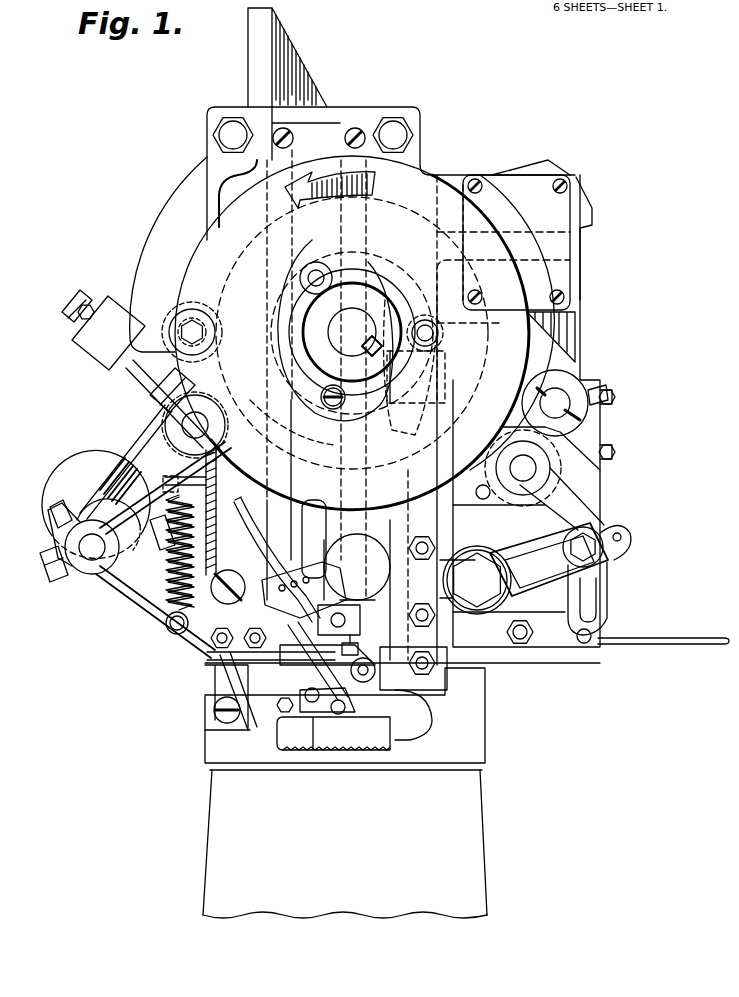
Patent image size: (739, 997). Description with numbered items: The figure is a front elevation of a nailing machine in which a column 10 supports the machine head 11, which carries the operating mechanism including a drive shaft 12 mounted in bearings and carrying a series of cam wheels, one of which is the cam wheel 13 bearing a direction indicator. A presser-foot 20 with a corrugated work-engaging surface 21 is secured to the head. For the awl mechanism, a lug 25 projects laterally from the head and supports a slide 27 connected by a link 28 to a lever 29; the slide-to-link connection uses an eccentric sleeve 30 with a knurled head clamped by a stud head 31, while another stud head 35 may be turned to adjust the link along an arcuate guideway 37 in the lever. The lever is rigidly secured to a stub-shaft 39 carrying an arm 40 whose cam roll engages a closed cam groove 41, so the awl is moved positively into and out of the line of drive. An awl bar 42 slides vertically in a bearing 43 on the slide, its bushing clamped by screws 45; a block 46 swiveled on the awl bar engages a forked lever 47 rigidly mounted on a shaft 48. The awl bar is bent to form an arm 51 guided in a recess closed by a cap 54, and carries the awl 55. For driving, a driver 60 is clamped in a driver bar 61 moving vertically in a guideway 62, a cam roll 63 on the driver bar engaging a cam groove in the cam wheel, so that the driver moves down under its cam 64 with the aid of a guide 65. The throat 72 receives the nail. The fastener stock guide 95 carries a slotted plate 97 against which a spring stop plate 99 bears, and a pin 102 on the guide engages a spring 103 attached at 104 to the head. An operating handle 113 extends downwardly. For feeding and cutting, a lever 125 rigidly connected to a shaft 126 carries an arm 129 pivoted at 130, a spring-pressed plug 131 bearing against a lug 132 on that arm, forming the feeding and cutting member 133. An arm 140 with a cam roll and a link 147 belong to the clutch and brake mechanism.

The column 10 is at (345, 844).
The machine head 11 is at (478, 717).
The drive shaft 12 is at (352, 333).
The cam wheel 13 is at (182, 254).
The presser-foot 20 is at (340, 740).
The corrugated work-engaging surface 21 is at (327, 752).
The lug 25 is at (593, 491).
The slide 27 is at (478, 558).
The link 28 is at (549, 559).
The lever 29 is at (562, 499).
The eccentric sleeve 30 is at (510, 599).
The stud head 31 is at (477, 580).
The stud head 35 is at (597, 547).
The guideway 37 is at (607, 597).
The stub-shaft 39 is at (527, 468).
The arm 40 is at (483, 397).
The closed cam groove 41 is at (285, 422).
The awl bar 42 is at (423, 701).
The bearing 43 is at (445, 647).
The screws 45 is at (442, 546).
The block 46 is at (448, 380).
The forked lever 47 is at (535, 350).
The shaft 48 is at (560, 404).
The arm 51 is at (520, 231).
The cap 54 is at (527, 235).
The awl 55 is at (352, 668).
The driver 60 is at (352, 643).
The driver bar 61 is at (334, 529).
The guideway 62 is at (332, 116).
The cam roll 63 is at (323, 273).
The cam 64 is at (427, 318).
The guide 65 is at (370, 680).
The throat 72 is at (340, 710).
The fastener stock guide 95 is at (357, 567).
The plate 97 is at (323, 656).
The spring stop plate 99 is at (300, 552).
The pin 102 is at (177, 630).
The spring 103 is at (186, 533).
The spring attachment 104 is at (193, 486).
The operating handle 113 is at (683, 645).
The lever 125 is at (103, 452).
The shaft 126 is at (195, 423).
The arm 129 is at (163, 550).
The pivot 130 is at (92, 557).
The spring-pressed plug 131 is at (50, 510).
The lug 132 is at (60, 528).
The feeding and cutting member 133 is at (212, 651).
The arm 140 is at (170, 345).
The link 147 is at (72, 303).